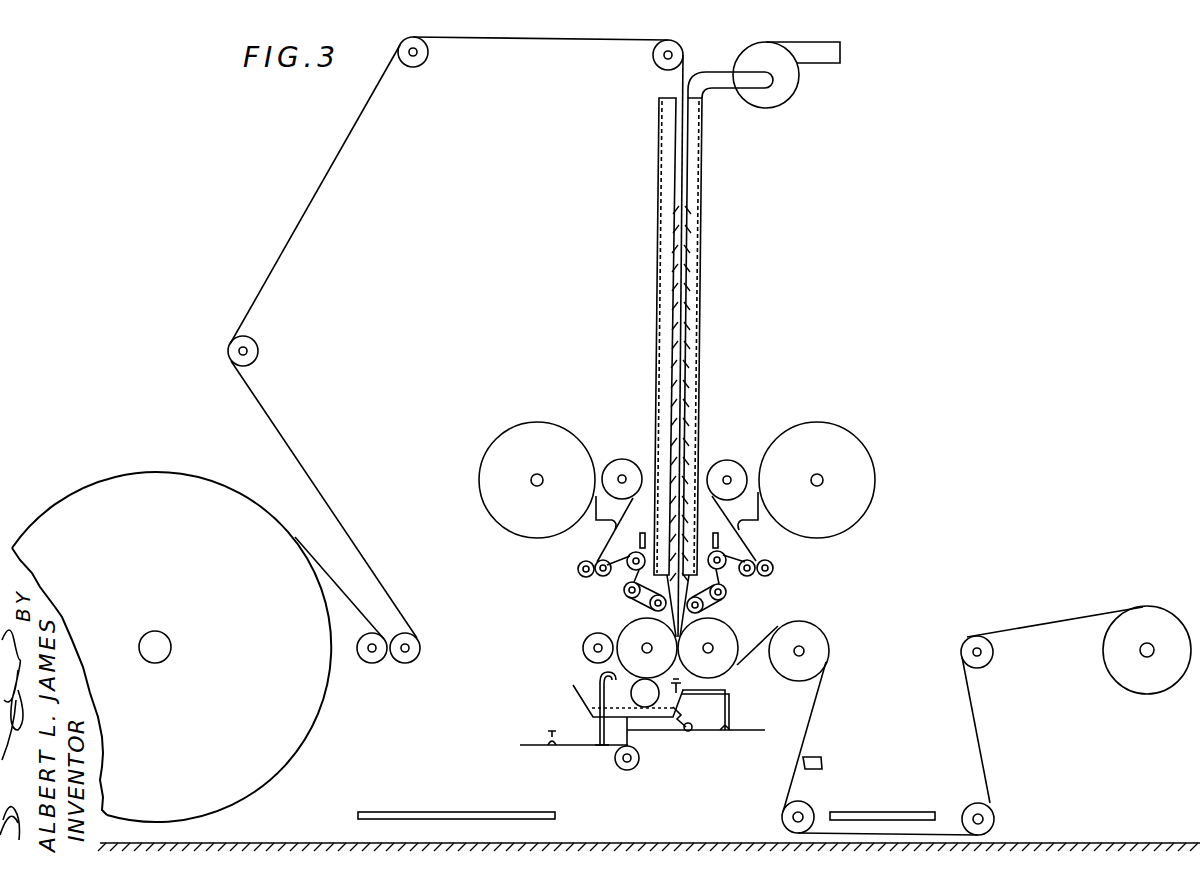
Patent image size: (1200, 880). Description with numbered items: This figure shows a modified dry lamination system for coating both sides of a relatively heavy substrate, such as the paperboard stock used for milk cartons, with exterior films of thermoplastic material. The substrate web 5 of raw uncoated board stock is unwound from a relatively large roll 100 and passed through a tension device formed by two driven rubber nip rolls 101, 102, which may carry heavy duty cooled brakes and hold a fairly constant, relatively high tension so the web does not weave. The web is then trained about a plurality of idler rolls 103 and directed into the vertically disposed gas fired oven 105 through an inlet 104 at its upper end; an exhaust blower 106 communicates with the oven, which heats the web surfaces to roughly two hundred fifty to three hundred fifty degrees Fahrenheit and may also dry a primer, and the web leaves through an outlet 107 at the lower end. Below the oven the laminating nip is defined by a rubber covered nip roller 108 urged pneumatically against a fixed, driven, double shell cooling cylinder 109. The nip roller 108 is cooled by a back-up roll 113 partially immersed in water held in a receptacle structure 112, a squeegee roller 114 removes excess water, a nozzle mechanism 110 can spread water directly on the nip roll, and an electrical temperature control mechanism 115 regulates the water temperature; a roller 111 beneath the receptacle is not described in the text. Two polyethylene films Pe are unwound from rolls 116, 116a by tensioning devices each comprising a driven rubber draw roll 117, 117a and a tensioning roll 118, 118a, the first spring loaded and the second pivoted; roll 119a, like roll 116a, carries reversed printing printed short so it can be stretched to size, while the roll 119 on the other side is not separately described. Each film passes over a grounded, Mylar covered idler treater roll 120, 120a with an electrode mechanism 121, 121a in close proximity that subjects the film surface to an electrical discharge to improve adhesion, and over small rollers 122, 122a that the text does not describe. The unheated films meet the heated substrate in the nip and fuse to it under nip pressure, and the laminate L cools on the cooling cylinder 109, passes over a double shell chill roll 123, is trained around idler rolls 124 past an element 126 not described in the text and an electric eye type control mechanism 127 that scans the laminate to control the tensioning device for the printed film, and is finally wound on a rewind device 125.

The substrate web 5 is at (302, 462).
The roll 100 is at (165, 552).
The rubber nip roll 101 is at (377, 663).
The rubber nip roll 102 is at (412, 661).
The idler rolls 103 is at (422, 62).
The inlet 104 is at (675, 96).
The gas fired oven 105 is at (703, 172).
The exhaust blower 106 is at (780, 93).
The outlet 107 is at (684, 578).
The nip roller 108 is at (661, 644).
The cooling cylinder 109 is at (722, 644).
The nozzle mechanism 110 is at (599, 682).
The roller 111 is at (620, 766).
The receptacle structure 112 is at (580, 700).
The back-up roll 113 is at (654, 701).
The squeegee roller 114 is at (584, 648).
The electrical temperature control mechanism 115 is at (689, 733).
The roll of polyethylene material 116 is at (631, 446).
The roll of polyethylene material 116a is at (732, 458).
The rubber draw roll 117 is at (613, 562).
The rubber draw roll 117a is at (751, 576).
The tensioning roll 118 is at (578, 569).
The tensioning roll 118a is at (772, 564).
The film supply roll 119 is at (551, 459).
The roll 119a is at (845, 459).
The treater roll 120 is at (617, 581).
The treater roll 120a is at (724, 567).
The electrode mechanism 121 is at (651, 523).
The electrode mechanism 121a is at (719, 541).
The guide rollers 122 is at (650, 607).
The guide rollers 122a is at (702, 610).
The chill roll 123 is at (814, 644).
The idler rolls 124 is at (984, 659).
The rewind device 125 is at (1147, 650).
The support plate 126 is at (870, 811).
The electric eye type control mechanism 127 is at (820, 757).
The laminate L is at (814, 703).
The polyethylene films Pe is at (664, 518).